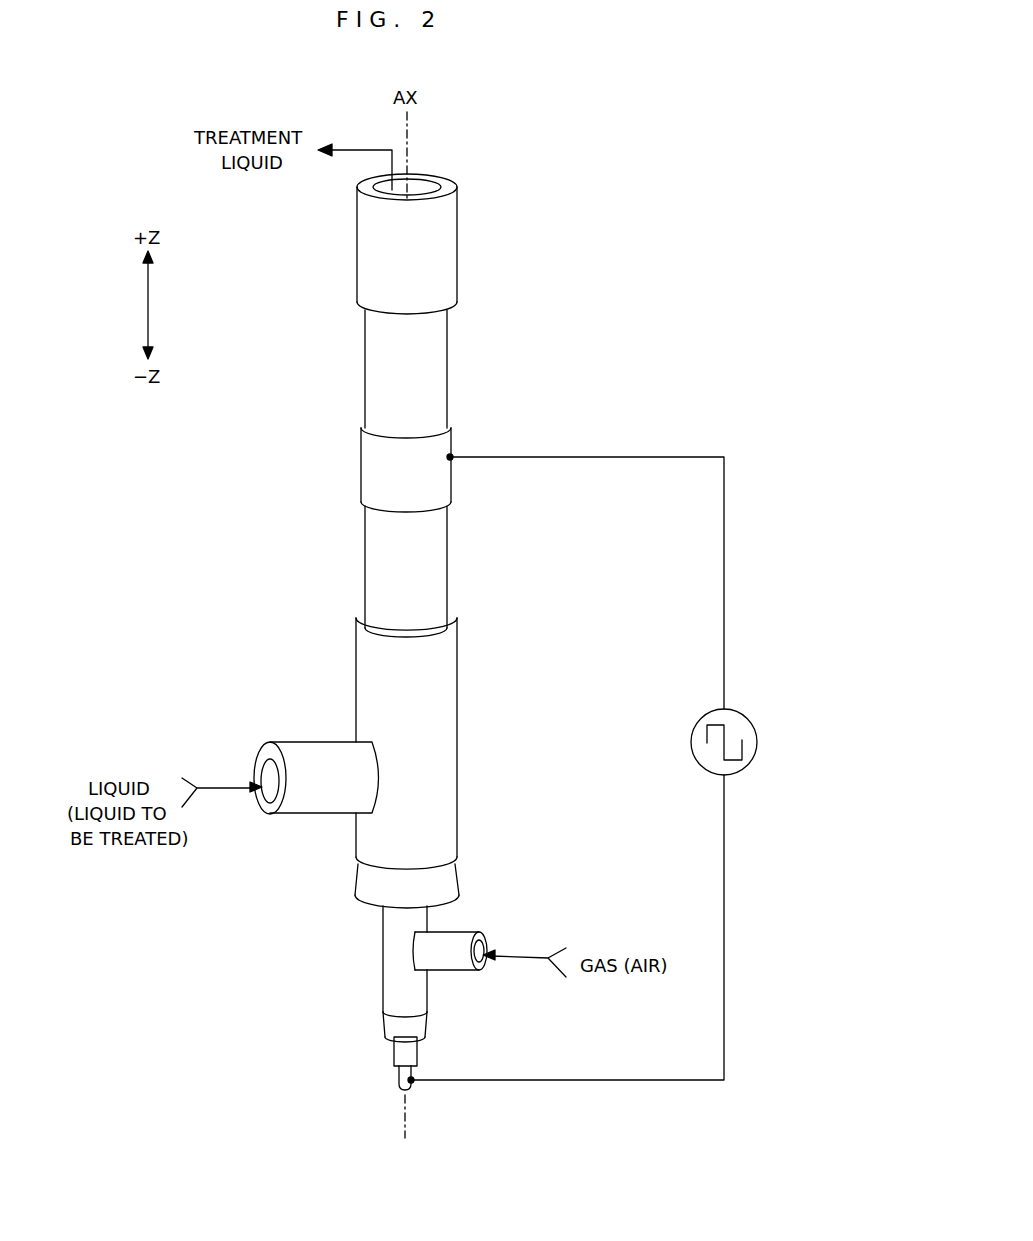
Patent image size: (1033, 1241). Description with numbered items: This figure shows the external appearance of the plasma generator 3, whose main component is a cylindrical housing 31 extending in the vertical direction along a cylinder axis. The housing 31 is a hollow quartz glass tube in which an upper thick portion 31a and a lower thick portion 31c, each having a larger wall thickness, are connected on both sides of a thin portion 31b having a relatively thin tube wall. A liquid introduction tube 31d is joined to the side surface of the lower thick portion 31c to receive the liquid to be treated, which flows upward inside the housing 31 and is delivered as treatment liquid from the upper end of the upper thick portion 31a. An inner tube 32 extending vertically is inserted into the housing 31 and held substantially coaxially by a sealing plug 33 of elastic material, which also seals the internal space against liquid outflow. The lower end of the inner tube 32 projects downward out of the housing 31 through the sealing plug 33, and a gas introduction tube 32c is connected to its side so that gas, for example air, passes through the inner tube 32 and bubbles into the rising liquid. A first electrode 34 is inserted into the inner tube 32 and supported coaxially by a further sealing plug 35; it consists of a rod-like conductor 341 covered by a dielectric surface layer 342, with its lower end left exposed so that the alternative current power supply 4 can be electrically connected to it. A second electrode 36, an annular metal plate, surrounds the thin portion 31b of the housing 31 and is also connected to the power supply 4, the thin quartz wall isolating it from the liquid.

The plasma generator 3 is at (596, 242).
The alternative current power supply 4 is at (757, 740).
The housing 31 is at (247, 243).
The upper thick portion 31a is at (362, 247).
The thin portion 31b is at (366, 370).
The lower thick portion 31c is at (358, 662).
The liquid introduction tube 31d is at (287, 743).
The inner tube 32 is at (386, 938).
The gas introduction tube 32c is at (468, 932).
The sealing plug 33 is at (362, 875).
The first electrode 34 is at (308, 1037).
The sealing plug 35 is at (388, 1025).
The second electrode 36 is at (447, 487).
The conductor 341 is at (398, 1080).
The surface layer 342 is at (398, 1052).